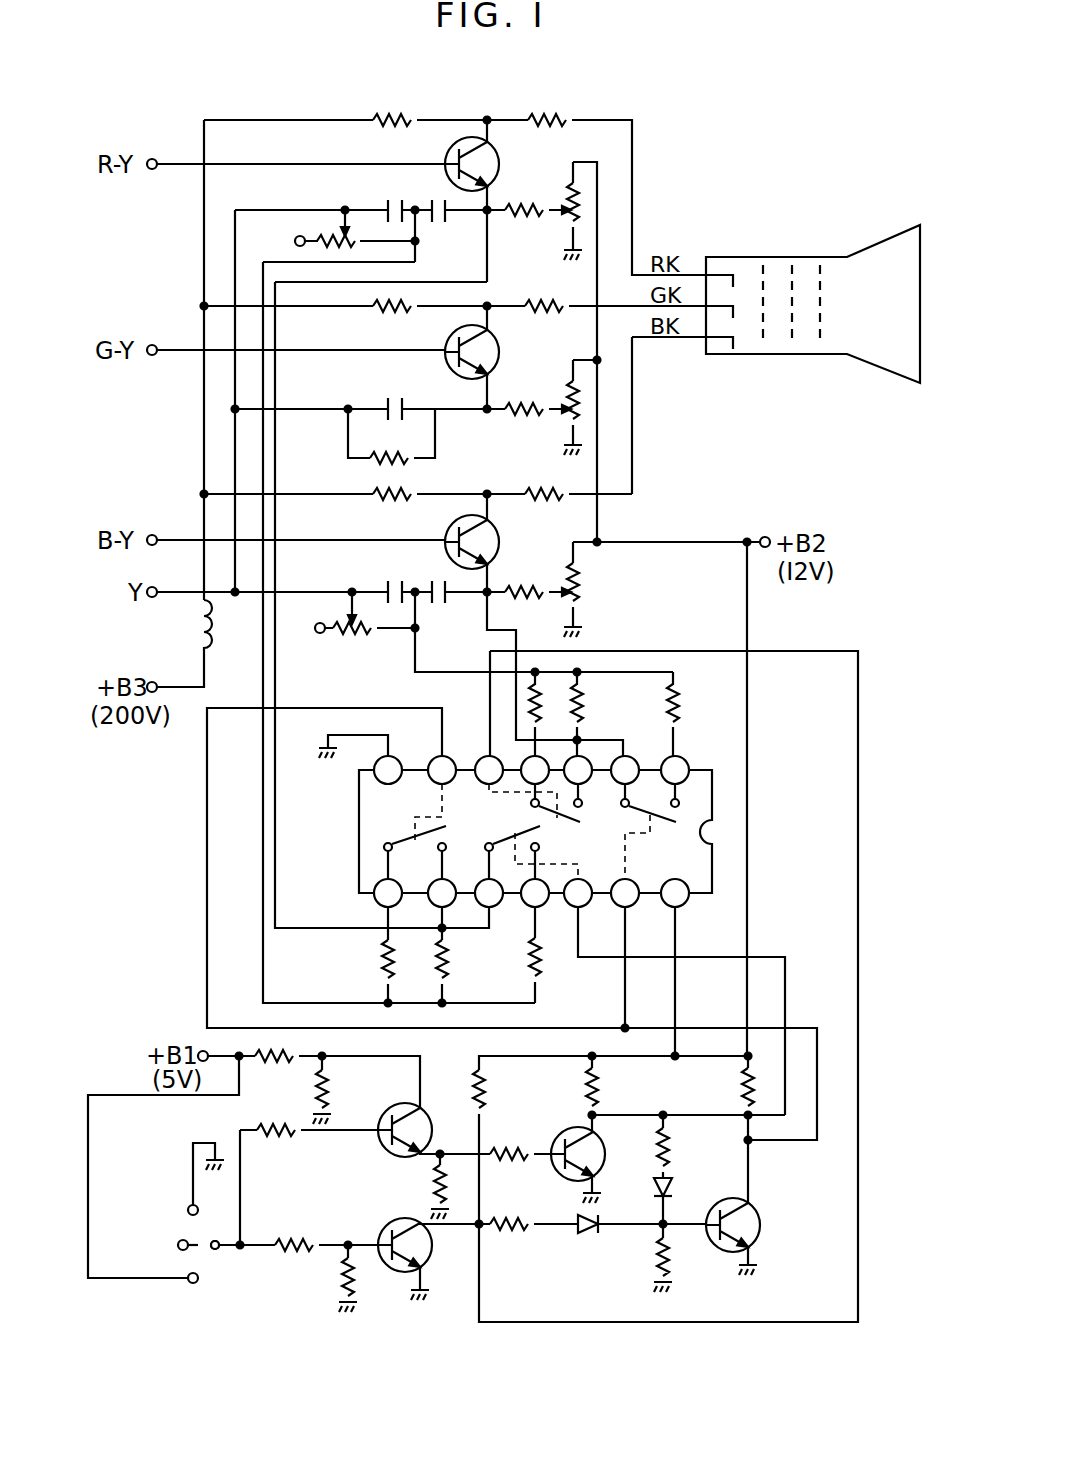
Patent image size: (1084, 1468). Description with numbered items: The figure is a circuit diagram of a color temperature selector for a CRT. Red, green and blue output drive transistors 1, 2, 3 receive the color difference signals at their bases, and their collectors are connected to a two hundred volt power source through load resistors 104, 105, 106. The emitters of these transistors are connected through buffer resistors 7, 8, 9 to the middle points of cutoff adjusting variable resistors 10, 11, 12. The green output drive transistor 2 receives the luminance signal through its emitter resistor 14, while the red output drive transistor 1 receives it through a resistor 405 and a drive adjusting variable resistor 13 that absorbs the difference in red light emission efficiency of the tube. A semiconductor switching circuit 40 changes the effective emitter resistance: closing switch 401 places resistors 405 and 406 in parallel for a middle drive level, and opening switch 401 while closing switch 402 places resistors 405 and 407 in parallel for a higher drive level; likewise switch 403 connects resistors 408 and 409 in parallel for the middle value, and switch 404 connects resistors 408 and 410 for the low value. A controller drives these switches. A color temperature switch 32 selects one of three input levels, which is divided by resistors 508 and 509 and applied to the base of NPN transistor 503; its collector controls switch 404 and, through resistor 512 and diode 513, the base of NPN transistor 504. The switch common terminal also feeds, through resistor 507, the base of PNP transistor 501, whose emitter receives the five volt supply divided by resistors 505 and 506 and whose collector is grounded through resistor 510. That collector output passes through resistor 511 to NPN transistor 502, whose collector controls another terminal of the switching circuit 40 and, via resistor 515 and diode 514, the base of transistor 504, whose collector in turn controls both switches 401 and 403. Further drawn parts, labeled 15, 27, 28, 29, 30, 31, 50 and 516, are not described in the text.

The red output drive transistor 1 is at (505, 174).
The green output drive transistor 2 is at (504, 363).
The blue output drive transistor 3 is at (504, 553).
The buffer resistor 7 is at (518, 214).
The buffer resistor 8 is at (518, 412).
The buffer resistor 9 is at (520, 594).
The cutoff adjusting variable resistor 10 is at (570, 192).
The cutoff adjusting variable resistor 11 is at (570, 386).
The cutoff adjusting variable resistor 12 is at (582, 576).
The drive adjusting variable resistor 13 is at (340, 238).
The emitter resistor 14 is at (384, 454).
The variable resistor (cut-off adjustment) 15 is at (368, 636).
The capacitor 27 is at (408, 197).
The capacitor 28 is at (438, 224).
The capacitor 29 is at (384, 402).
The capacitor 30 is at (438, 606).
The capacitor 31 is at (386, 588).
The color temperature switch 32 is at (214, 1258).
The semiconductor switching circuit 40 is at (502, 821).
The color temperature control circuit 50 is at (502, 1181).
The load resistor 104 is at (374, 96).
The load resistor 105 is at (378, 310).
The load resistor 106 is at (376, 498).
The switch 401 is at (412, 838).
The switch 402 is at (520, 836).
The switch 403 is at (656, 810).
The switch 404 is at (534, 828).
The resistor 405 is at (445, 954).
The resistor 406 is at (382, 968).
The resistor 407 is at (538, 962).
The resistor 408 is at (584, 708).
The resistor 409 is at (678, 718).
The resistor 410 is at (546, 706).
The PNP transistor 501 is at (432, 1120).
The NPN transistor 502 is at (558, 1144).
The NPN transistor 503 is at (384, 1264).
The NPN transistor 504 is at (776, 1215).
The resistor 505 is at (270, 1056).
The resistor 506 is at (328, 1070).
The resistor 507 is at (261, 1130).
The resistor 508 is at (276, 1238).
The resistor 509 is at (344, 1262).
The resistor 510 is at (438, 1188).
The resistor 511 is at (530, 1160).
The resistor 512 is at (496, 1230).
The diode 513 is at (612, 1238).
The diode 514 is at (658, 1202).
The resistor 515 is at (666, 1126).
The resistor 516 is at (594, 1066).